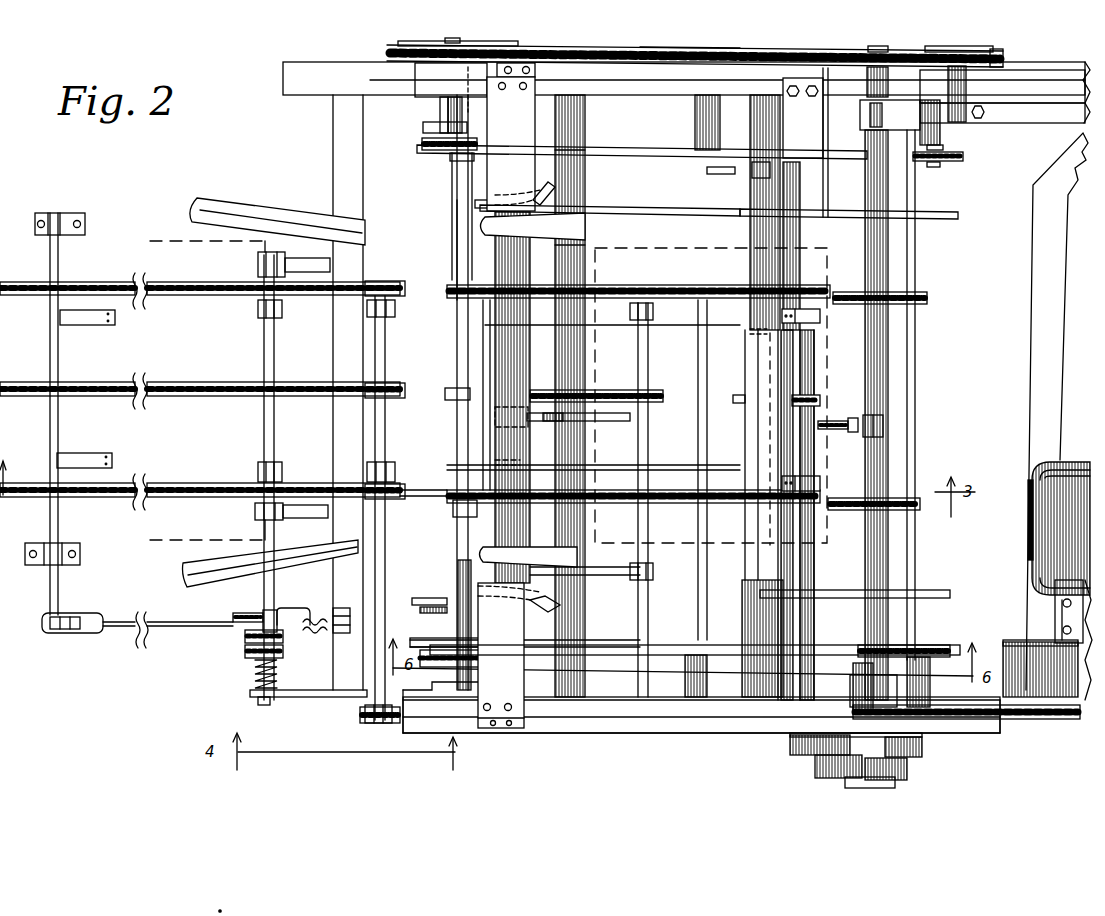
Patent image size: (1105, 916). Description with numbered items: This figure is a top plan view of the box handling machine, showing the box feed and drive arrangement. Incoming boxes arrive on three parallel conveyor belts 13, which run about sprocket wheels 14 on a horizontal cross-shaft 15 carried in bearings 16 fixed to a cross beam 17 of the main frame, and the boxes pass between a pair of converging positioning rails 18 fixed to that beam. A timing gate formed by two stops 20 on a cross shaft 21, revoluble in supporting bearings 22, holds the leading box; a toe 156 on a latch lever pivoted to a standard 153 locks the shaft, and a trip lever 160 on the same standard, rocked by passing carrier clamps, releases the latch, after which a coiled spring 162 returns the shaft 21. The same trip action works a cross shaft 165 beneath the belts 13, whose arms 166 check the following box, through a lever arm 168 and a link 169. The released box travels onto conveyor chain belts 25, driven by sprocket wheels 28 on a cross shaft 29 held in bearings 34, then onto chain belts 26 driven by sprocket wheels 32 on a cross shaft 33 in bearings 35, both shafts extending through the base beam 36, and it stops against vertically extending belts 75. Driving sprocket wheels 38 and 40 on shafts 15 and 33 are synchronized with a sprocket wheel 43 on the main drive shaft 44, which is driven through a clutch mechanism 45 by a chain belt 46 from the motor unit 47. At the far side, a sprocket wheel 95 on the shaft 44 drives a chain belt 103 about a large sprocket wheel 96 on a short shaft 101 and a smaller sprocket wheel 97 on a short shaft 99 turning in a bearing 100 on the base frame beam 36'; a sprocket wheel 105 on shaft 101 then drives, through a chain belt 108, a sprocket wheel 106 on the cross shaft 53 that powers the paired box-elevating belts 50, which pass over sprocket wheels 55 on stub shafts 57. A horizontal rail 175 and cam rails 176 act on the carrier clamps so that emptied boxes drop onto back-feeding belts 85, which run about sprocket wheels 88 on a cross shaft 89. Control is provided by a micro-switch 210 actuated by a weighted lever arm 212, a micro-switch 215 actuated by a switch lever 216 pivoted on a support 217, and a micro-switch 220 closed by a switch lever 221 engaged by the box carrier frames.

The conveyor belts 13 is at (175, 298).
The sprocket wheels 14 is at (397, 286).
The cross-shaft 15 is at (375, 433).
The bearings 16 is at (395, 310).
The cross beam 17 is at (333, 128).
The positioning rails 18 is at (245, 205).
The stops 20 is at (262, 318).
The cross shaft 21 is at (264, 415).
The supporting bearings 22 is at (258, 265).
The conveyor chain belts 25 is at (585, 390).
The chain belts 26 is at (815, 393).
The sprocket wheels 28 is at (650, 390).
The cross shaft 29 is at (698, 425).
The sprocket wheels 32 is at (820, 400).
The cross shaft 33 is at (800, 455).
The bearings 34 is at (653, 312).
The bearings 35 is at (822, 316).
The base beam 36 is at (701, 735).
The base frame beam 36' is at (695, 42).
The driving sprocket wheel 38 is at (365, 720).
The driving sprocket wheel 40 is at (395, 725).
The driving sprocket wheel 43 is at (925, 740).
The drive shaft 44 is at (888, 343).
The clutch mechanism 45 is at (808, 772).
The chain belt 46 is at (980, 718).
The motor unit 47 is at (1032, 532).
The box-elevating belts 50 is at (660, 159).
The cross shaft 53 is at (457, 236).
The sprocket wheels 55 is at (452, 165).
The stub shafts 57 is at (448, 108).
The vertically extending belts 75 is at (890, 292).
The back-feeding conveyor belts 85 is at (610, 285).
The sprocket wheels 88 is at (455, 503).
The cross shaft 89 is at (483, 452).
The sprocket wheel 95 is at (880, 48).
The sprocket wheel 96 is at (430, 41).
The sprocket wheel 97 is at (1003, 60).
The short shaft 99 is at (960, 48).
The bearing 100 is at (975, 86).
The short shaft 101 is at (455, 38).
The sprocket chain belt 103 is at (670, 48).
The sprocket wheel 105 is at (423, 128).
The sprocket wheel 106 is at (497, 128).
The chain belt 108 is at (435, 153).
The standard 153 is at (341, 608).
The toe 156 is at (292, 608).
The lever 160 is at (403, 638).
The coiled spring 162 is at (255, 668).
The cross shaft 165 is at (50, 353).
The arms 166 is at (80, 325).
The lever arm 168 is at (42, 623).
The link 169 is at (115, 628).
The horizontal rail 175 is at (920, 212).
The cam rails 176 is at (555, 192).
The micro-switch 210 is at (510, 430).
The weighted lever arm 212 is at (605, 421).
The micro-switch 215 is at (883, 426).
The switch lever 216 is at (745, 440).
The support 217 is at (855, 420).
The micro-switch 220 is at (740, 216).
The switch lever 221 is at (715, 175).